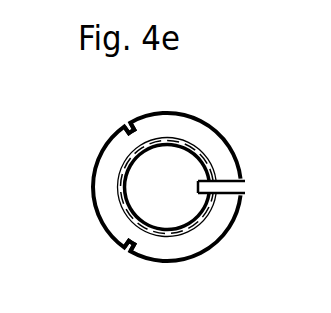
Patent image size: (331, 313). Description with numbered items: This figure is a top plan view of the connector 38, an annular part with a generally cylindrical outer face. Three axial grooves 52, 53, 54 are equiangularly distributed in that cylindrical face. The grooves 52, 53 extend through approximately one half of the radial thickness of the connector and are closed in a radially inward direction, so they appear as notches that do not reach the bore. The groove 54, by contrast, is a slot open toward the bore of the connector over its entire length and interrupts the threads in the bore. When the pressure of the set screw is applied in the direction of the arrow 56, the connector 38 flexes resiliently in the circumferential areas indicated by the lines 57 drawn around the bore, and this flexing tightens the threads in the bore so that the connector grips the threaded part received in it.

The connector 38 is at (92, 150).
The axial groove 52 is at (128, 247).
The axial groove 53 is at (128, 128).
The groove 54 is at (240, 187).
The arrow 56 is at (84, 187).
The lines 57 is at (195, 156).